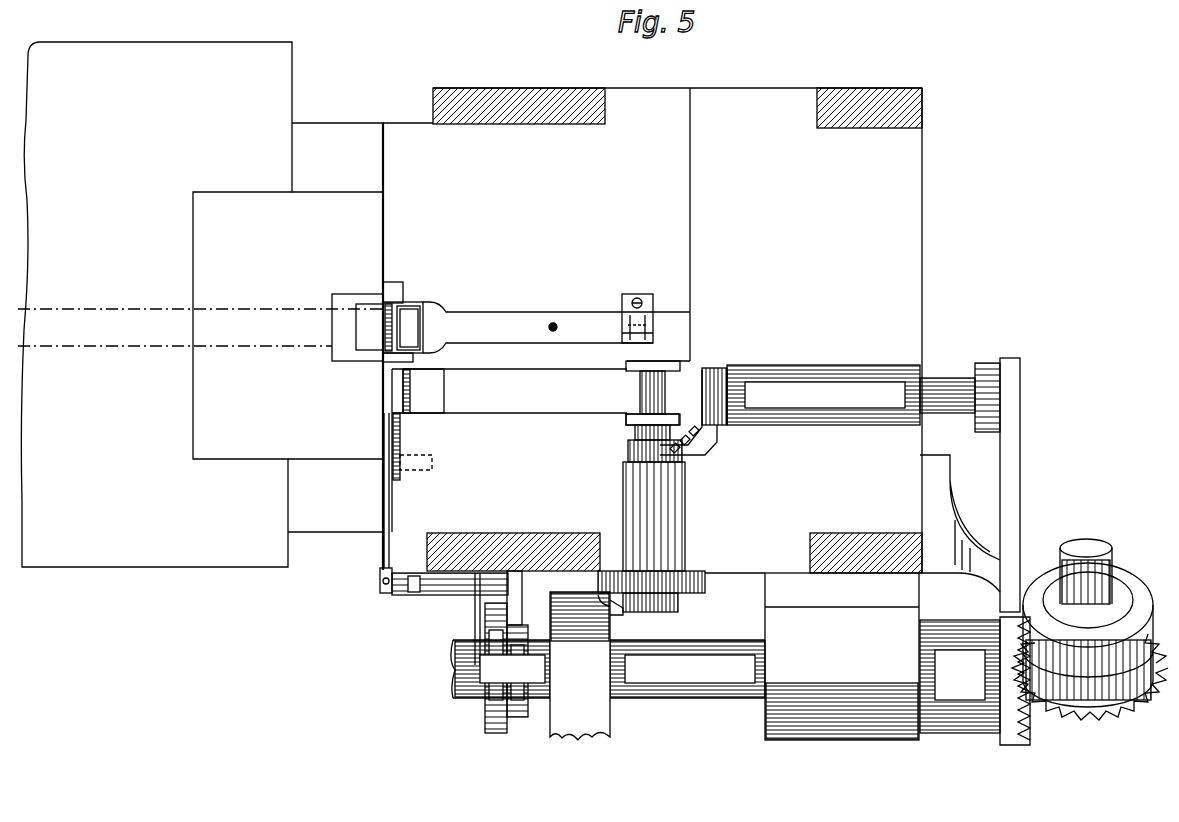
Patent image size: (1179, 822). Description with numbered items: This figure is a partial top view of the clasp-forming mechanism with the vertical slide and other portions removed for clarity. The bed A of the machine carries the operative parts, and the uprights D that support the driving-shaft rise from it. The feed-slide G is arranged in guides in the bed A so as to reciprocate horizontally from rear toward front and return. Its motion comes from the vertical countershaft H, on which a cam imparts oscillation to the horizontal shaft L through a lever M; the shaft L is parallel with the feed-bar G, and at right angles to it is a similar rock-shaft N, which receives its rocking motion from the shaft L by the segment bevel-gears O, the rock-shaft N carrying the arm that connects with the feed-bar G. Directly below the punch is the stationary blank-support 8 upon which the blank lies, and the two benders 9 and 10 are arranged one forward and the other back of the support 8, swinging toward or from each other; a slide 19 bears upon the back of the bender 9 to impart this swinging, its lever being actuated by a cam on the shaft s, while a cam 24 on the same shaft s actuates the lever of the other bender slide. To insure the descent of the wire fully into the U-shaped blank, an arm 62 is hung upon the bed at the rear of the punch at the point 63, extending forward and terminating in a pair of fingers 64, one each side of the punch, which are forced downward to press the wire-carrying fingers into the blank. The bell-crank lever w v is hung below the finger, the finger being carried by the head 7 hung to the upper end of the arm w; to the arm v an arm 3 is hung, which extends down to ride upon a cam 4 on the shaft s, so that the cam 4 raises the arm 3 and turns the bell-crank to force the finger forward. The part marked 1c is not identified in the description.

The bed A is at (652, 330).
The uprights D is at (674, 330).
The slide 19 is at (357, 327).
The bender 9 is at (369, 327).
The blank-support 8 is at (392, 299).
The bender 10 is at (403, 327).
The arm 62 is at (556, 327).
The hinge of arm 62 63 is at (650, 310).
The fingers 64 is at (408, 302).
The feed-slide G is at (536, 446).
The strip 1c is at (400, 498).
The head 7 is at (379, 503).
The arm of bell-crank lever w is at (450, 619).
The arm of bell-crank lever v is at (514, 598).
The cam 4 is at (496, 668).
The arm 3 is at (517, 671).
The shaft s is at (608, 669).
The cam 24 is at (586, 666).
The rock-shaft N is at (660, 474).
The segment bevel-gears O is at (708, 455).
The horizontal shaft L is at (851, 394).
The lever M is at (980, 485).
The vertical countershaft H is at (1115, 537).